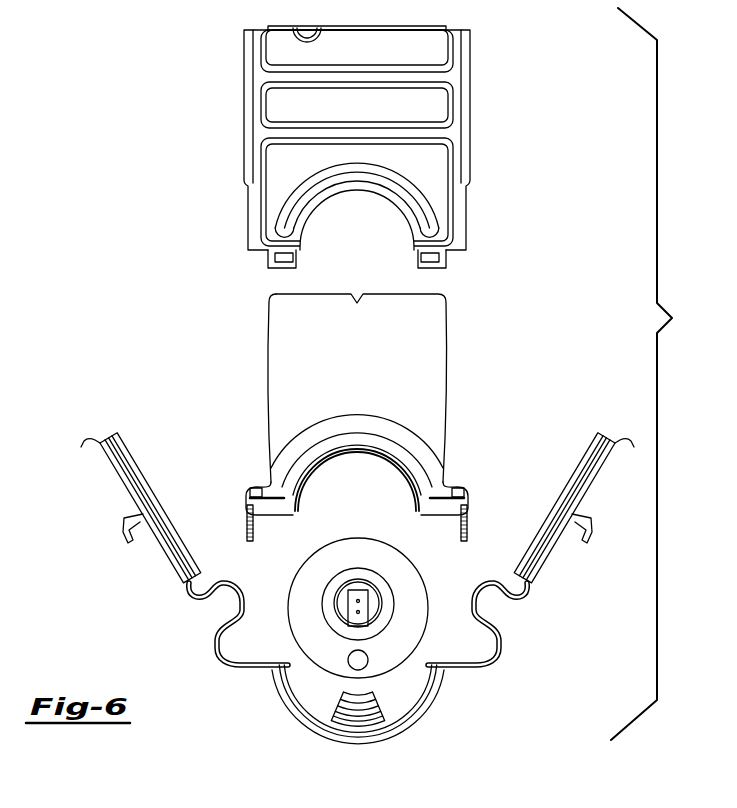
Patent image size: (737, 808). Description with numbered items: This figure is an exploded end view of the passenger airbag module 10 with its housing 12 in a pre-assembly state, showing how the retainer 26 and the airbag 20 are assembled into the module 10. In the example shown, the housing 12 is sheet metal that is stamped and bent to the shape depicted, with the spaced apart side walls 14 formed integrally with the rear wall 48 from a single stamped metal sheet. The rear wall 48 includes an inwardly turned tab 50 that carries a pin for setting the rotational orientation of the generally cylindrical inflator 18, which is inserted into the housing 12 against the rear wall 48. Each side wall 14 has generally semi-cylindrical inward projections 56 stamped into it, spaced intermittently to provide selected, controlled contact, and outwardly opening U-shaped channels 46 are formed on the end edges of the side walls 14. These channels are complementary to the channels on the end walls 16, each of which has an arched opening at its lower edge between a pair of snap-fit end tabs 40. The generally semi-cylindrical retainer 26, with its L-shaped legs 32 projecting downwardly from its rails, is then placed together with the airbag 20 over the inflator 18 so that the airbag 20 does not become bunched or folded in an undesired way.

The passenger airbag module 10 is at (656, 374).
The housing 12 is at (82, 432).
The side walls 14 is at (518, 598).
The end walls 16 is at (478, 89).
The inflator 18 is at (331, 530).
The airbag 20 is at (458, 406).
The retainer 26 is at (445, 463).
The L-shaped legs 32 is at (471, 524).
The snap-fit end tabs 40 is at (415, 258).
The U-shaped channels 46 is at (566, 480).
The rear wall 48 is at (315, 730).
The inwardly turned tab 50 is at (380, 703).
The inward projections 56 is at (477, 588).